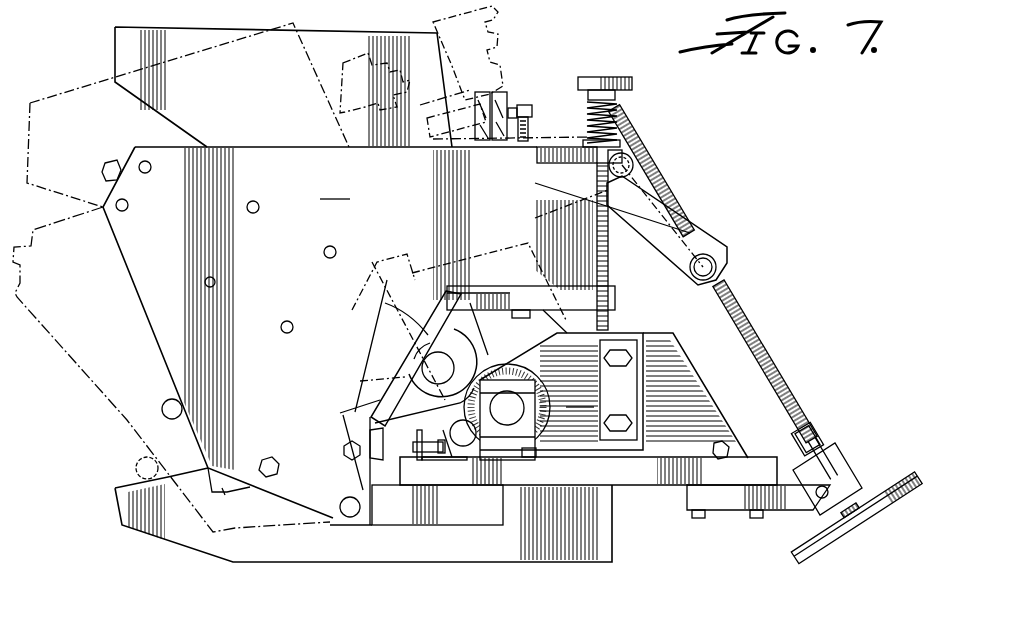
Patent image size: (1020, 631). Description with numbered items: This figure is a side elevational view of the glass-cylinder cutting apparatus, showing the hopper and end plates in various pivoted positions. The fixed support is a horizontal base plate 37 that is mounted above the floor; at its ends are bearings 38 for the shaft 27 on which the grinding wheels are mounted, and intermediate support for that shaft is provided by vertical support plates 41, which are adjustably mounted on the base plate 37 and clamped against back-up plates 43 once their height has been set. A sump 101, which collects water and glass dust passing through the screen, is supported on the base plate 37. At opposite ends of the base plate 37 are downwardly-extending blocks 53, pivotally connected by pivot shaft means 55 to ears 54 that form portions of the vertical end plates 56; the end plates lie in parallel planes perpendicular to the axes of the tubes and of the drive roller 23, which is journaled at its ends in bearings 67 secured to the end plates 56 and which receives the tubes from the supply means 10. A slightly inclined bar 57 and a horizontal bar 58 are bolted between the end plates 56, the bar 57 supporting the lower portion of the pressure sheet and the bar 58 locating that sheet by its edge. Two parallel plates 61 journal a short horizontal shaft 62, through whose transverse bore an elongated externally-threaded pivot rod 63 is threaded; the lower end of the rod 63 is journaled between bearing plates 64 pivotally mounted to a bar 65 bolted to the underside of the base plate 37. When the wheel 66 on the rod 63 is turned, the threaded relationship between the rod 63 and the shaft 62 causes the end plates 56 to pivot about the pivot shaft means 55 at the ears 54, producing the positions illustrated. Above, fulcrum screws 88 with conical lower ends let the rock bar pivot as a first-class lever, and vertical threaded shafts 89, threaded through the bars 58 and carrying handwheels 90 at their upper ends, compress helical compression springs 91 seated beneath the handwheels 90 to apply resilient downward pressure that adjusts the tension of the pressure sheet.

The supply means 10 is at (93, 80).
The end plates 56 is at (106, 382).
The fulcrum screws 88 is at (528, 128).
The handwheels 90 is at (617, 77).
The helical compression springs 91 is at (623, 113).
The vertical threaded shafts 89 is at (597, 226).
The second bar 58 is at (617, 300).
The parallel plates 61 is at (700, 243).
The short horizontal shaft 62 is at (713, 267).
The pivot rod 63 is at (743, 343).
The back-up plates 43 is at (700, 403).
The drive roller 23 is at (428, 355).
The bearings 67 is at (405, 365).
The vertical support plates 41 is at (553, 391).
The shaft 27 is at (517, 420).
The bearings 38 is at (536, 455).
The base plate 37 is at (665, 485).
The bar 65 is at (740, 507).
The bearing plates 64 is at (835, 465).
The wheel 66 is at (850, 527).
The sump 101 is at (530, 557).
The blocks 53 is at (453, 523).
The ears 54 is at (360, 523).
The pivot shaft means 55 is at (353, 497).
The bar 57 is at (214, 490).